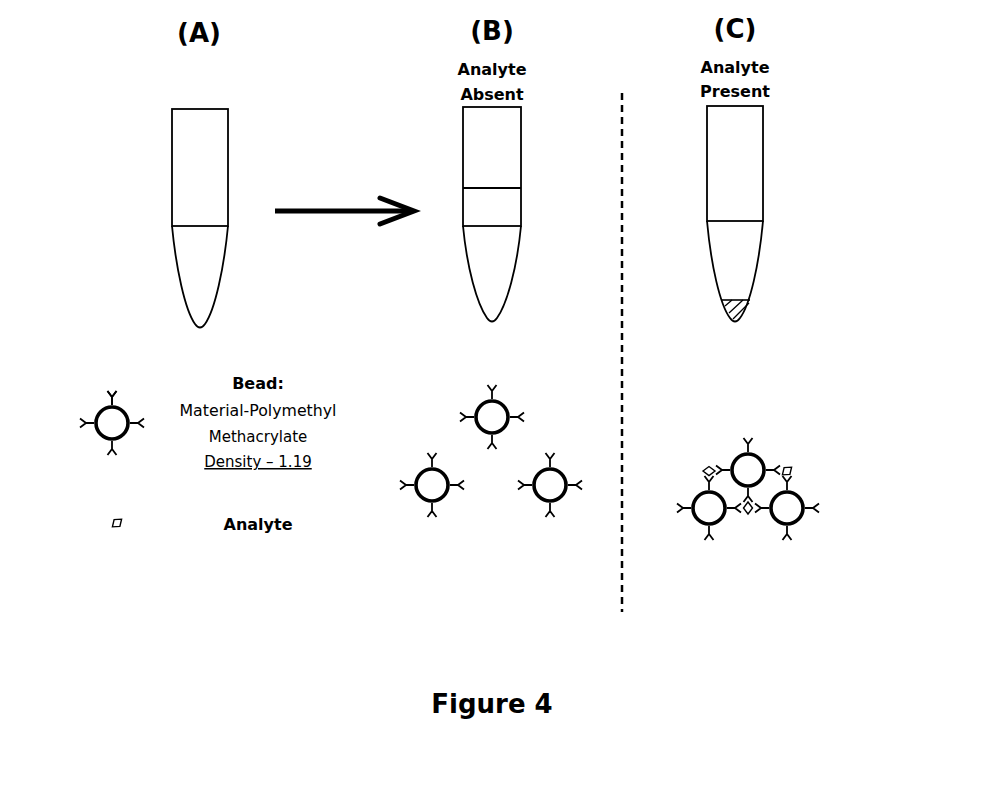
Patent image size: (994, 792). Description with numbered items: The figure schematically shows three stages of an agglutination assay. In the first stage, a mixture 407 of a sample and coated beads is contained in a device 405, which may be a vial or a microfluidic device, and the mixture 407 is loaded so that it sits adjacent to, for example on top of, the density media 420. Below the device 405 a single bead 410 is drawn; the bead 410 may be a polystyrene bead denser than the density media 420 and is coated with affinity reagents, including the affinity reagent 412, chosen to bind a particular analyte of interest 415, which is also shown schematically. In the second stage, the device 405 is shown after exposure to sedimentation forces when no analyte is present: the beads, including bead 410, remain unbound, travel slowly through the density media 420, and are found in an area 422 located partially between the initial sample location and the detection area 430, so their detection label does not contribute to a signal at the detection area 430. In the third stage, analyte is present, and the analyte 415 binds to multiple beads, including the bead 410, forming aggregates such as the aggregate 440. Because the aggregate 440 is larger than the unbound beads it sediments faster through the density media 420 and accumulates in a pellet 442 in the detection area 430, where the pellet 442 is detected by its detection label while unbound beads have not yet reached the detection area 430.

In FIG. 4A, the device 405 is at (188, 218).
In FIG. 4A, the mixture 407 is at (230, 152).
In FIG. 4A, the density media 420 is at (223, 285).
In FIG. 4A, the bead 410 is at (96, 414).
In FIG. 4B, the bead 410 is at (508, 405).
In FIG. 4C, the bead 410 is at (760, 455).
In FIG. 4A, the affinity reagent 412 is at (114, 395).
In FIG. 4A, the analyte of interest 415 is at (123, 528).
In FIG. 4C, the analyte of interest 415 is at (793, 467).
In FIG. 4B, the area 422 is at (523, 205).
In FIG. 4B, the detection area 430 is at (501, 239).
In FIG. 4C, the detection area 430 is at (785, 225).
In FIG. 4C, the pellet 442 is at (750, 312).
In FIG. 4C, the aggregate 440 is at (807, 478).